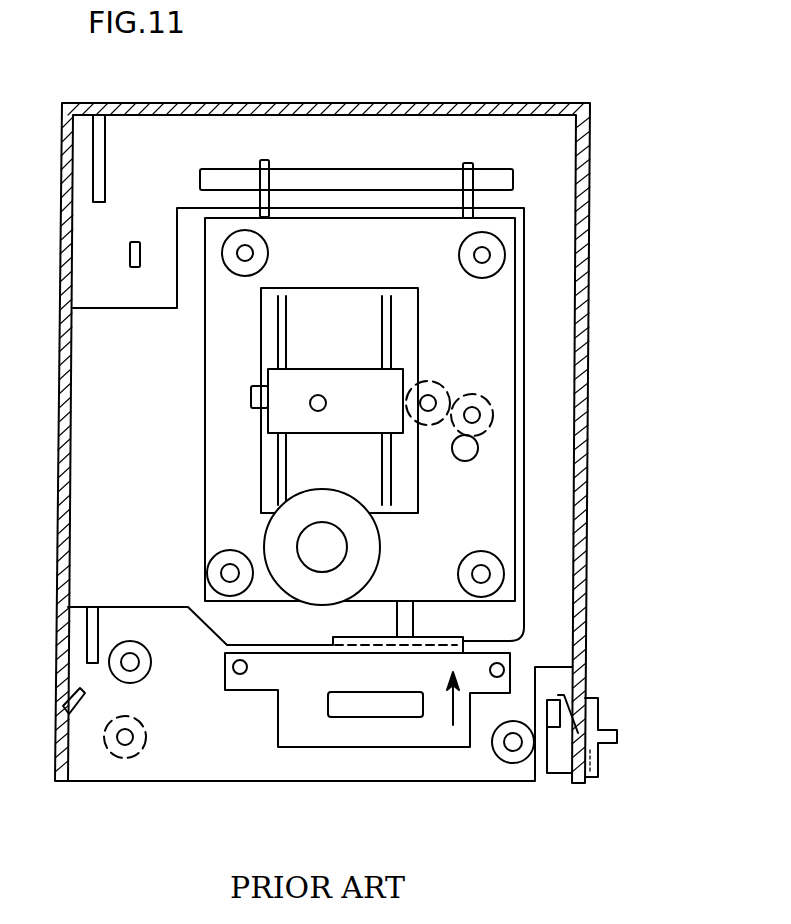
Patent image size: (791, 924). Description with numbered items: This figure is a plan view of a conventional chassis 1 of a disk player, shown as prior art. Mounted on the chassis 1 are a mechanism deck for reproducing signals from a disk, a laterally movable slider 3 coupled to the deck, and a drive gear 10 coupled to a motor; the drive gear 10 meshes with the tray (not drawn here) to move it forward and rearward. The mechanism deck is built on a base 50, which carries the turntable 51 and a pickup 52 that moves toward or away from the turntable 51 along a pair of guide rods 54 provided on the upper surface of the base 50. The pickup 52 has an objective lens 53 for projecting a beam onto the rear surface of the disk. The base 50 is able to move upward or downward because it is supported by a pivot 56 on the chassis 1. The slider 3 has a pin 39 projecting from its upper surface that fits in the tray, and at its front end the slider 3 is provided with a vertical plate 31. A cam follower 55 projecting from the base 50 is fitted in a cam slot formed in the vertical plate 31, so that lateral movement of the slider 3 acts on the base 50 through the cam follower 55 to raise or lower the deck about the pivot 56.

The chassis 1 is at (548, 492).
The slider 3 is at (387, 737).
The drive gear 10 is at (125, 746).
The vertical plate 31 is at (345, 637).
The pin 39 is at (496, 678).
The base 50 is at (493, 318).
The turntable 51 is at (373, 547).
The pickup 52 is at (343, 380).
The objective lens 53 is at (310, 410).
The guide rods 54 is at (278, 312).
The cam follower 55 is at (407, 622).
The pivot 56 is at (355, 177).